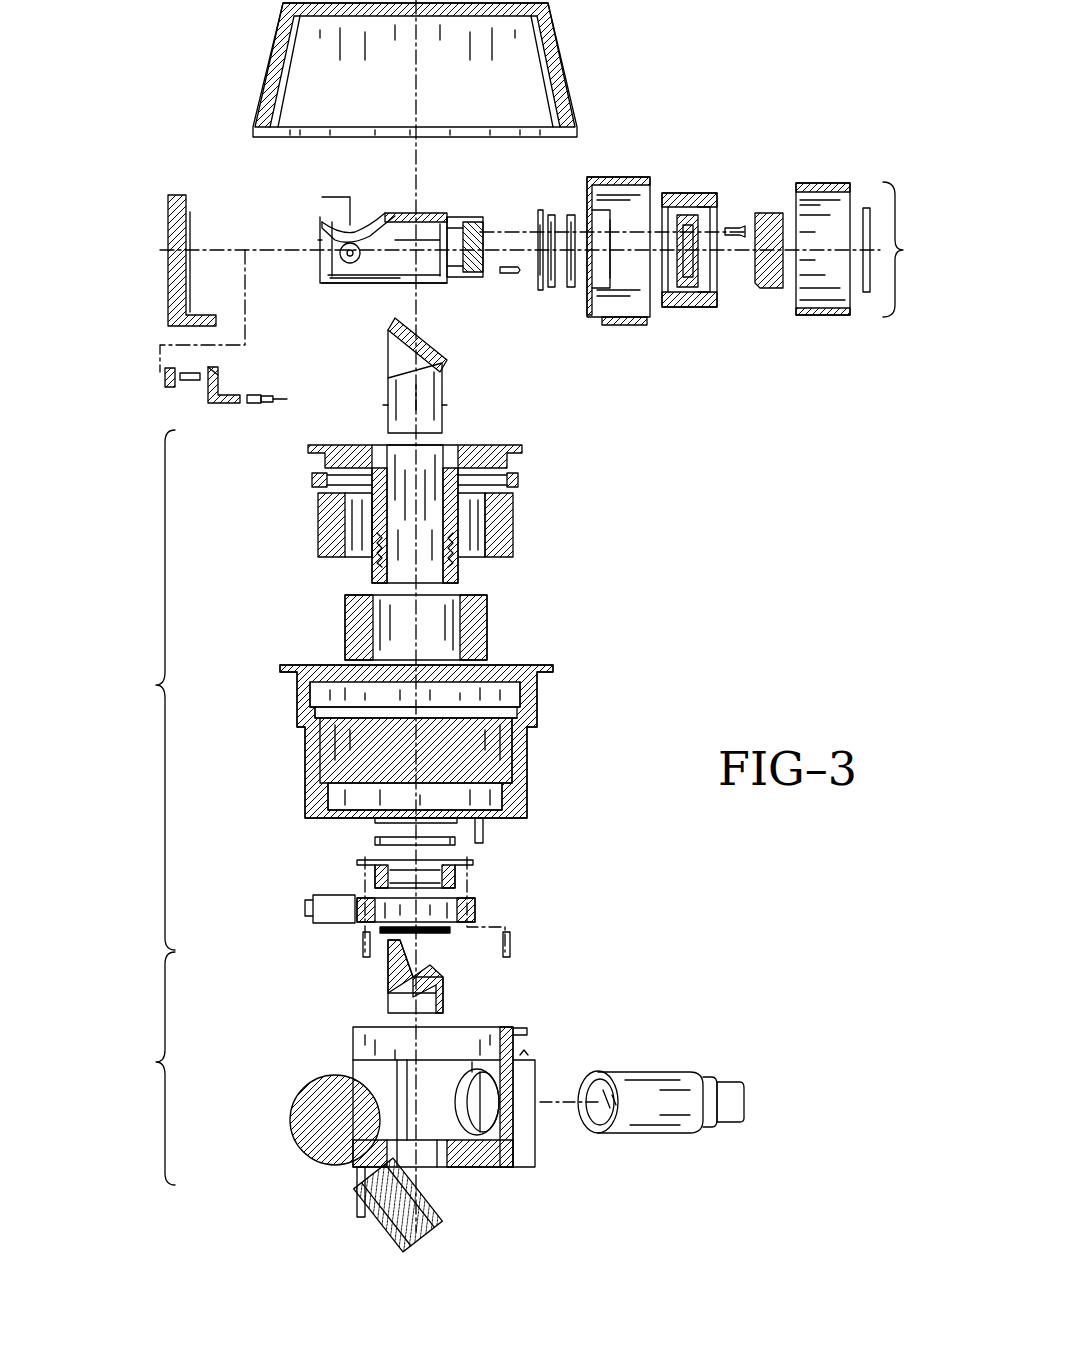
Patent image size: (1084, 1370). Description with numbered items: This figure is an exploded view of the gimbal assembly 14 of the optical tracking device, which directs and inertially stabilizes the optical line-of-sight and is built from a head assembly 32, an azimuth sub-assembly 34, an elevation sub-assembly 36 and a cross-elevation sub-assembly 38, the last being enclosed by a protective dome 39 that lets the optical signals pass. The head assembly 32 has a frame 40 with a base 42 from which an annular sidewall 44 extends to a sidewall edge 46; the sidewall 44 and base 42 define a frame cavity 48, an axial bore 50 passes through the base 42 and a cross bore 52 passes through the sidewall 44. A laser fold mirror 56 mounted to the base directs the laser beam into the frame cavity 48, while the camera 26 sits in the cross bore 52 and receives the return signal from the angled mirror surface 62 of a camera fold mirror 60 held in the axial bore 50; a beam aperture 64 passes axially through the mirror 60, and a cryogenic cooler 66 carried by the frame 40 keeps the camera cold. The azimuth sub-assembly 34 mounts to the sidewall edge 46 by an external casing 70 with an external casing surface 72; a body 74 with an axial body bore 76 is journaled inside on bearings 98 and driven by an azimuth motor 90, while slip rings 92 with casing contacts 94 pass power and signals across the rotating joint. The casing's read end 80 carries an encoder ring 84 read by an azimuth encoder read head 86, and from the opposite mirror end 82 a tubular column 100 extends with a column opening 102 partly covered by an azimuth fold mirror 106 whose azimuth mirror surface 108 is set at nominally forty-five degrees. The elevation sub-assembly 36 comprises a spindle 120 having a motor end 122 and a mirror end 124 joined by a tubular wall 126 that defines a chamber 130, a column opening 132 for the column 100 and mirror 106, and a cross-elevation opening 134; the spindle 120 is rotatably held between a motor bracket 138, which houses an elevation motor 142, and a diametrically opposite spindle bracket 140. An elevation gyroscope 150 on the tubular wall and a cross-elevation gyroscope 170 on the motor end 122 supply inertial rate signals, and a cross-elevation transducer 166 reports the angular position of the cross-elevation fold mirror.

The gimbal assembly 14 is at (243, 858).
The camera 26 is at (660, 1118).
The head assembly 32 is at (139, 1068).
The azimuth sub-assembly 34 is at (139, 690).
The elevation sub-assembly 36 is at (910, 249).
The cross-elevation sub-assembly 38 is at (275, 233).
The protective dome 39 is at (278, 95).
The frame 40 is at (440, 1115).
The base 42 is at (500, 1166).
The annular sidewall 44 is at (520, 1055).
The sidewall edge 46 is at (500, 1035).
The frame cavity 48 is at (440, 1095).
The axial bore 50 is at (435, 1150).
The cross bore 52 is at (475, 1122).
The laser fold mirror 56 is at (433, 1225).
The camera fold mirror 60 is at (367, 981).
The angled mirror surface 62 is at (365, 940).
The beam aperture 64 is at (400, 998).
The cryogenic cooler 66 is at (320, 1148).
The external casing 70 is at (414, 741).
The external casing surface 72 is at (528, 745).
The body 74 is at (380, 577).
The body bore 76 is at (410, 510).
The read end 80 is at (320, 818).
The mirror end 82 is at (515, 447).
The encoder ring 84 is at (450, 885).
The azimuth encoder read head 86 is at (318, 912).
The azimuth motor 90 is at (520, 520).
The slip rings 92 is at (465, 556).
The casing contact 94 is at (385, 545).
The bearings 98 is at (315, 478).
The tubular column 100 is at (401, 375).
The column opening 102 is at (432, 412).
The azimuth fold mirror 106 is at (449, 340).
The azimuth mirror surface 108 is at (400, 338).
The spindle 120 is at (415, 232).
The motor end 122 is at (473, 225).
The mirror end 124 is at (335, 219).
The tubular wall 126 is at (350, 284).
The chamber 130 is at (392, 262).
The column opening 132 is at (400, 279).
The cross-elevation opening 134 is at (376, 226).
The motor bracket 138 is at (618, 327).
The spindle bracket 140 is at (168, 305).
The elevation motor 142 is at (728, 305).
The elevation gyroscope 150 is at (392, 218).
The cross-elevation transducer 166 is at (208, 400).
The cross-elevation gyroscope 170 is at (830, 318).